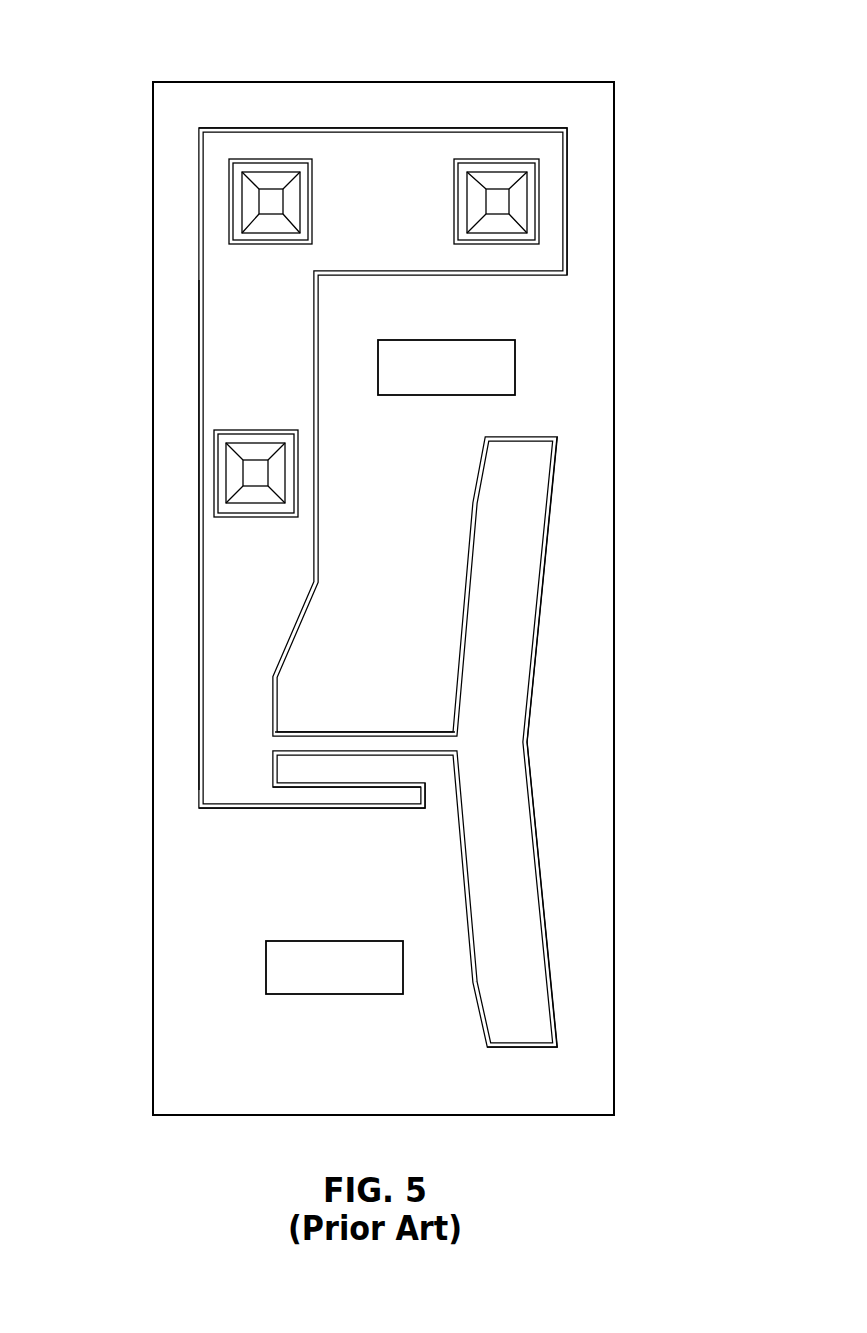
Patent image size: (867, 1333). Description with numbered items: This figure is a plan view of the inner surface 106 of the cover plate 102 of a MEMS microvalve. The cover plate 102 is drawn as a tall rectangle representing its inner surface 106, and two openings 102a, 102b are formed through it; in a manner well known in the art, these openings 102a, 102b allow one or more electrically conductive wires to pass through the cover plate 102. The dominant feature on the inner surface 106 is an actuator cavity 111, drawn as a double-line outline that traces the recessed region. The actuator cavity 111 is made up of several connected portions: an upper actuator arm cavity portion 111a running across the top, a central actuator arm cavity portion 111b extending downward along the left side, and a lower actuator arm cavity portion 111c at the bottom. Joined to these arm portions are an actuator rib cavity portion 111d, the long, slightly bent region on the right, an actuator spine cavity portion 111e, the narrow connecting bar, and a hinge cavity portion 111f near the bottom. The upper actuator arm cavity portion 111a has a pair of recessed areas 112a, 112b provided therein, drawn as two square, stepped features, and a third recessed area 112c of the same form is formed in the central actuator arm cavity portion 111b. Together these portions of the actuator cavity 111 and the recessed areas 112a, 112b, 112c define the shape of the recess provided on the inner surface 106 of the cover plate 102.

The cover plate 102 is at (183, 35).
The opening 102a is at (505, 366).
The opening 102b is at (285, 970).
The inner surface 106 is at (587, 112).
The actuator cavity 111 is at (380, 150).
The upper actuator arm cavity portion 111a is at (213, 148).
The central actuator arm cavity portion 111b is at (228, 343).
The lower actuator arm cavity portion 111c is at (228, 780).
The actuator rib cavity portion 111d is at (517, 508).
The actuator spine cavity portion 111e is at (382, 743).
The hinge cavity portion 111f is at (343, 795).
The recessed area 112a is at (250, 205).
The recessed area 112b is at (517, 205).
The recessed area 112c is at (240, 475).